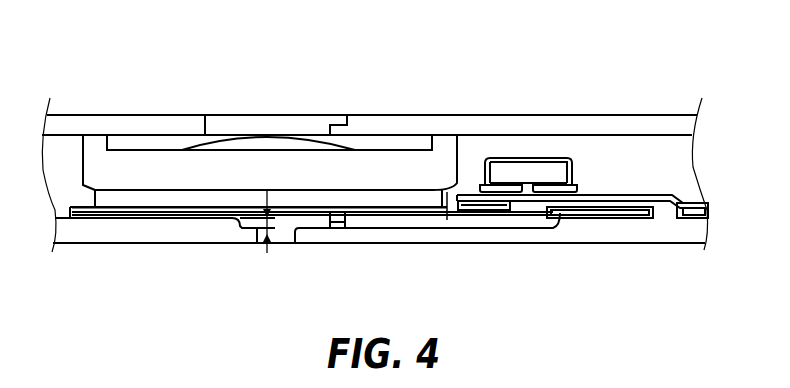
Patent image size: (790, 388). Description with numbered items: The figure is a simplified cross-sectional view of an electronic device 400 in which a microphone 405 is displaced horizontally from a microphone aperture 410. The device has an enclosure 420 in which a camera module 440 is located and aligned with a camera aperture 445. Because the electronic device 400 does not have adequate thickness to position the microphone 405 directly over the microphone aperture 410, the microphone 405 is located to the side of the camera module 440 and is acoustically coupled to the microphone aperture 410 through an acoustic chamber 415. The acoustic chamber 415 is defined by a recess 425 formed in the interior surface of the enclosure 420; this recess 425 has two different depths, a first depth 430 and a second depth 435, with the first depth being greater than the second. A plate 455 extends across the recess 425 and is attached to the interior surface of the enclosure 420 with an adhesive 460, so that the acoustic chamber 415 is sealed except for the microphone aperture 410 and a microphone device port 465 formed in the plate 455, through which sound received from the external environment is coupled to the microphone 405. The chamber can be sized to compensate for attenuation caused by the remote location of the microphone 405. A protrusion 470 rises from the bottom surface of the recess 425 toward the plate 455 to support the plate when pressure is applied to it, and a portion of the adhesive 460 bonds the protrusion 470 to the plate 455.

The electronic device 400 is at (296, 57).
The microphone 405 is at (530, 158).
The microphone aperture 410 is at (295, 231).
The acoustic chamber 415 is at (407, 215).
The enclosure 420 is at (585, 128).
The recess 425 is at (373, 228).
The first depth 430 is at (255, 228).
The second depth 435 is at (448, 222).
The camera module 440 is at (445, 150).
The camera aperture 445 is at (347, 118).
The plate 455 is at (112, 212).
The adhesive 460 is at (600, 218).
The microphone device port 465 is at (558, 218).
The protrusion 470 is at (337, 230).